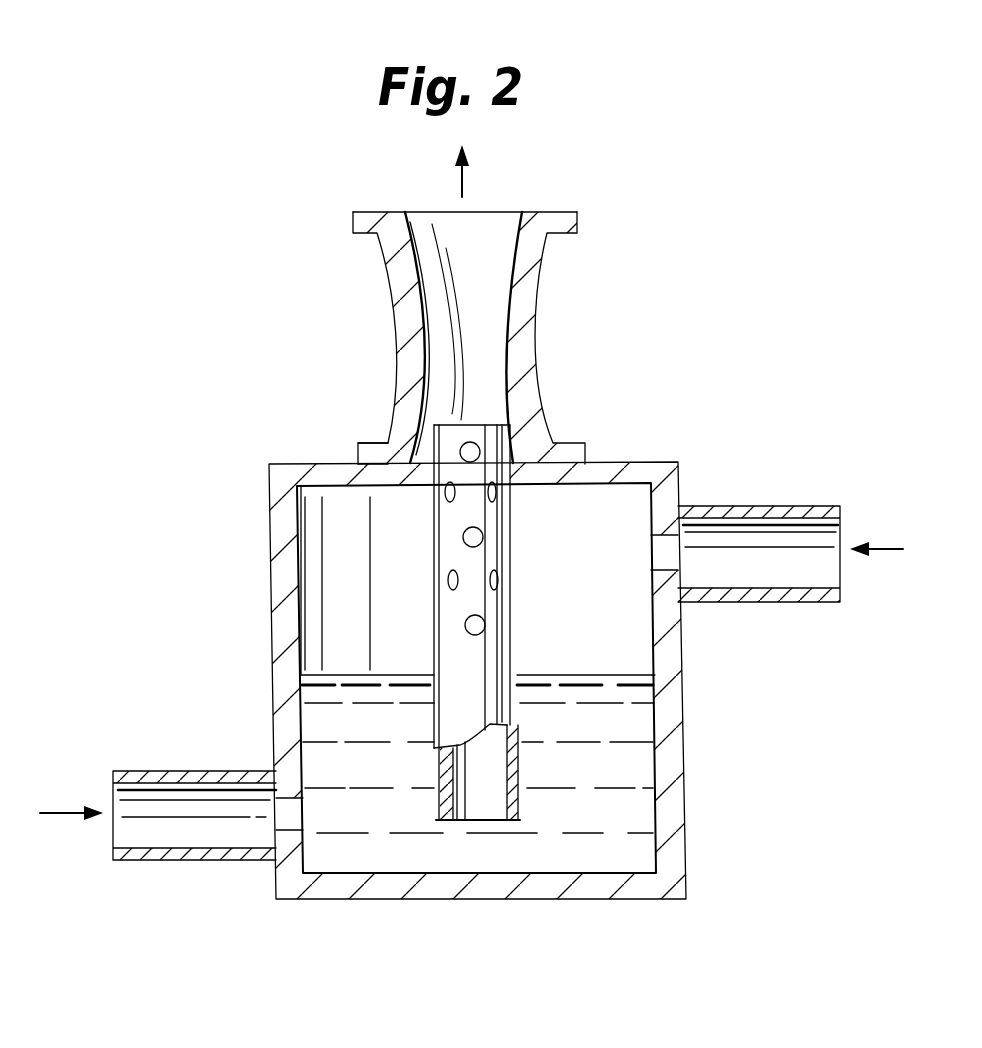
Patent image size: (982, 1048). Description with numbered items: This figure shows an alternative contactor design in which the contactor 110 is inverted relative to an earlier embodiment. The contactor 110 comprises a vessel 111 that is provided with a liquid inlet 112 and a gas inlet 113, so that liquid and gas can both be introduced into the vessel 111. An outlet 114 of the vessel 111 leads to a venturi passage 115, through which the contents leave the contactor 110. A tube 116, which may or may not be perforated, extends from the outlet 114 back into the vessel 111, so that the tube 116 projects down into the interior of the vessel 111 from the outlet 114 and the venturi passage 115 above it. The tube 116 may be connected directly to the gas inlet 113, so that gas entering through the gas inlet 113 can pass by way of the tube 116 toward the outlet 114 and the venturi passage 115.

The contactor 110 is at (702, 752).
The vessel 111 is at (269, 551).
The liquid inlet 112 is at (193, 860).
The gas inlet 113 is at (780, 505).
The outlet 114 is at (399, 442).
The venturi passage 115 is at (488, 358).
The tube 116 is at (493, 652).